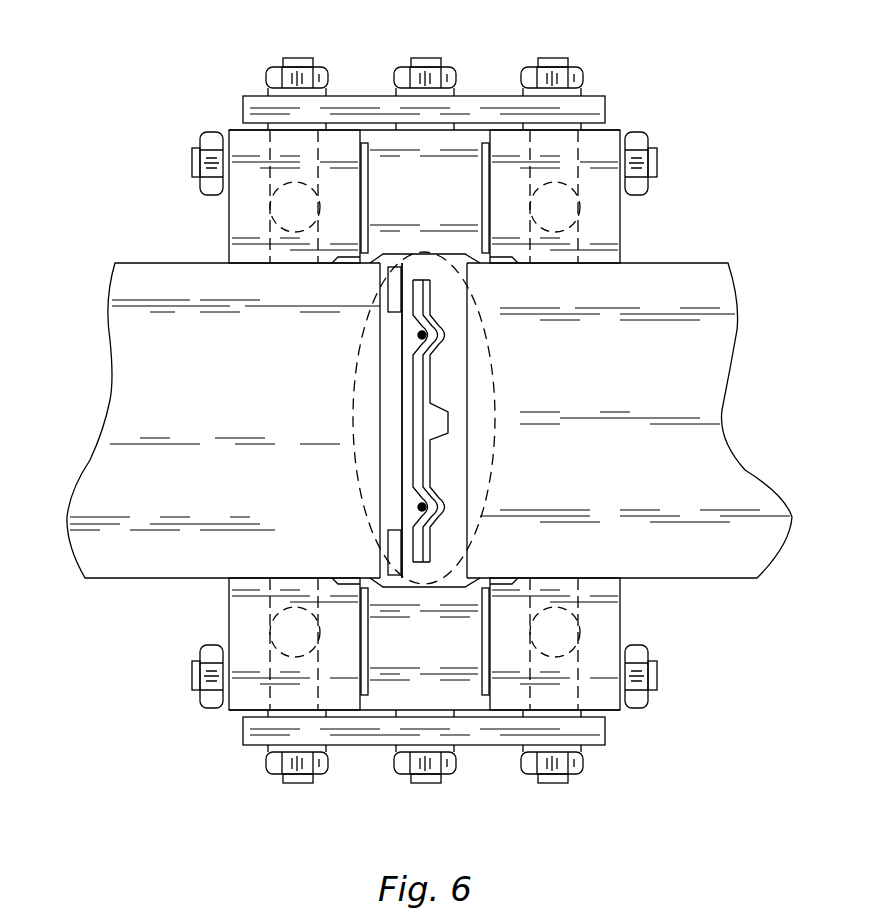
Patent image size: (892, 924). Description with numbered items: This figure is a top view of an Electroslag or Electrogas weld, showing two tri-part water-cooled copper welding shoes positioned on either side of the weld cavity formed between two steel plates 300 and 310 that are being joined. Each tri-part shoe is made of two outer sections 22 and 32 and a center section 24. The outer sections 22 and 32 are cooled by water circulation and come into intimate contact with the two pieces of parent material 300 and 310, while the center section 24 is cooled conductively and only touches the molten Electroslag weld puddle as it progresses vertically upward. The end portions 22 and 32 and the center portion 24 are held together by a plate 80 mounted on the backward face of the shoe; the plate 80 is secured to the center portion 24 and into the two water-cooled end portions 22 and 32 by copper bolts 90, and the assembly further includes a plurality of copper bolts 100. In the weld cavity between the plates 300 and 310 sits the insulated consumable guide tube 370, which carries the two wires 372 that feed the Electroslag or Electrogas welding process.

The outer section of the tri-part shoe 22 is at (257, 230).
The center section of the tri-part shoe 24 is at (453, 697).
The outer section of the tri-part shoe 32 is at (608, 227).
The plate 80 is at (597, 110).
The copper bolt 90 is at (575, 64).
The copper bolt 100 is at (657, 157).
The steel plate 300 is at (127, 450).
The steel plate 310 is at (715, 458).
The consumable guide tube 370 is at (413, 411).
The wire 372 is at (418, 334).